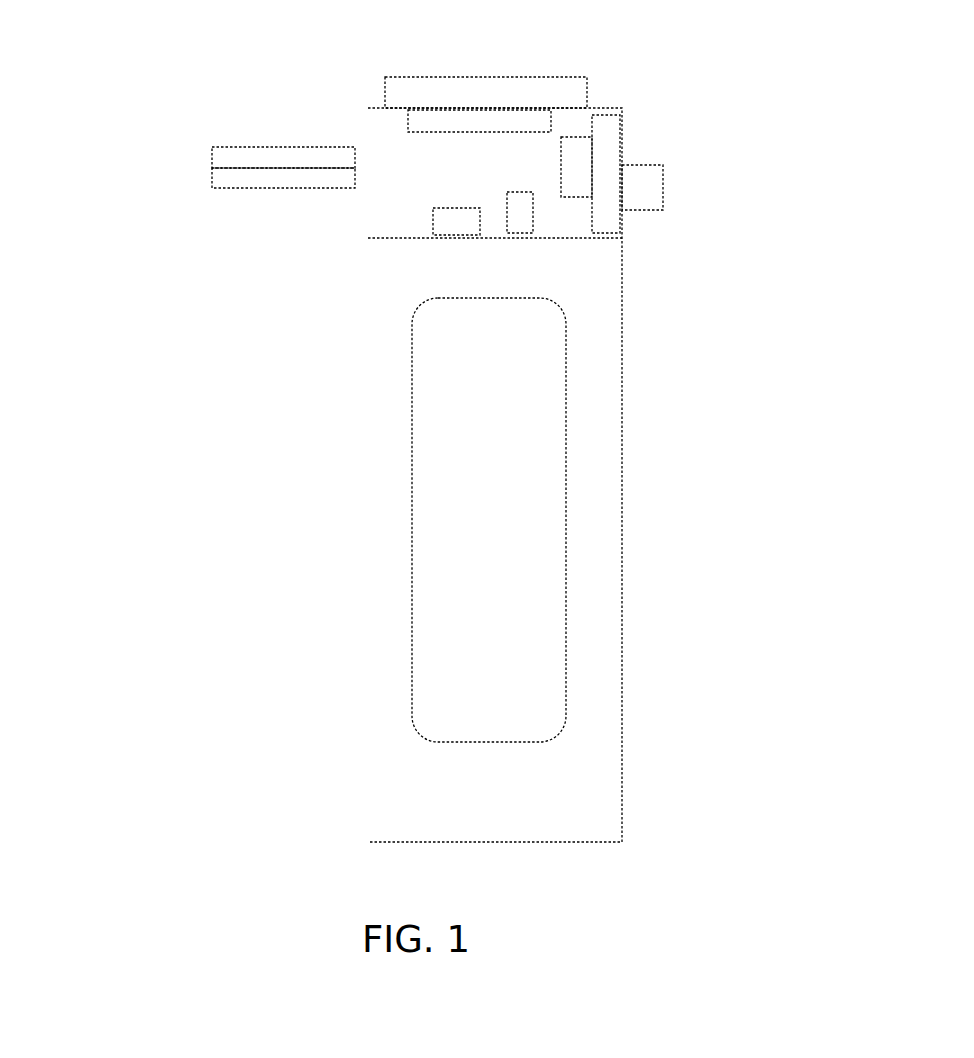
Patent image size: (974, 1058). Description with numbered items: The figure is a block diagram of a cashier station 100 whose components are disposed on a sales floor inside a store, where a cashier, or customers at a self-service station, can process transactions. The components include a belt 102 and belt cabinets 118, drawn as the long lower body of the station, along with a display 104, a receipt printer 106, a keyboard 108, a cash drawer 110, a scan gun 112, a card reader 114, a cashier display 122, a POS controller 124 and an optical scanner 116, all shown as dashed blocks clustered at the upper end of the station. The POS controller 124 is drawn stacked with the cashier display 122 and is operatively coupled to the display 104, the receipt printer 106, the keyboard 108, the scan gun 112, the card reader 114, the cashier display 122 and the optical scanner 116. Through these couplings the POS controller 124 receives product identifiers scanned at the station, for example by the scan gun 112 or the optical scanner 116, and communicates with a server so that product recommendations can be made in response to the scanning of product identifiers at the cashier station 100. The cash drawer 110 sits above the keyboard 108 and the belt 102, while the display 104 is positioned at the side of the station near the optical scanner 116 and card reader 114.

The cashier station 100 is at (860, 645).
The belt 102 is at (412, 611).
The display 104 is at (663, 196).
The receipt printer 106 is at (423, 221).
The keyboard 108 is at (622, 119).
The cash drawer 110 is at (385, 77).
The scan gun 112 is at (510, 193).
The card reader 114 is at (575, 200).
The optical scanner 116 is at (622, 138).
The belt cabinets 118 is at (367, 678).
The cashier display 122 is at (212, 178).
The POS controller 124 is at (212, 162).